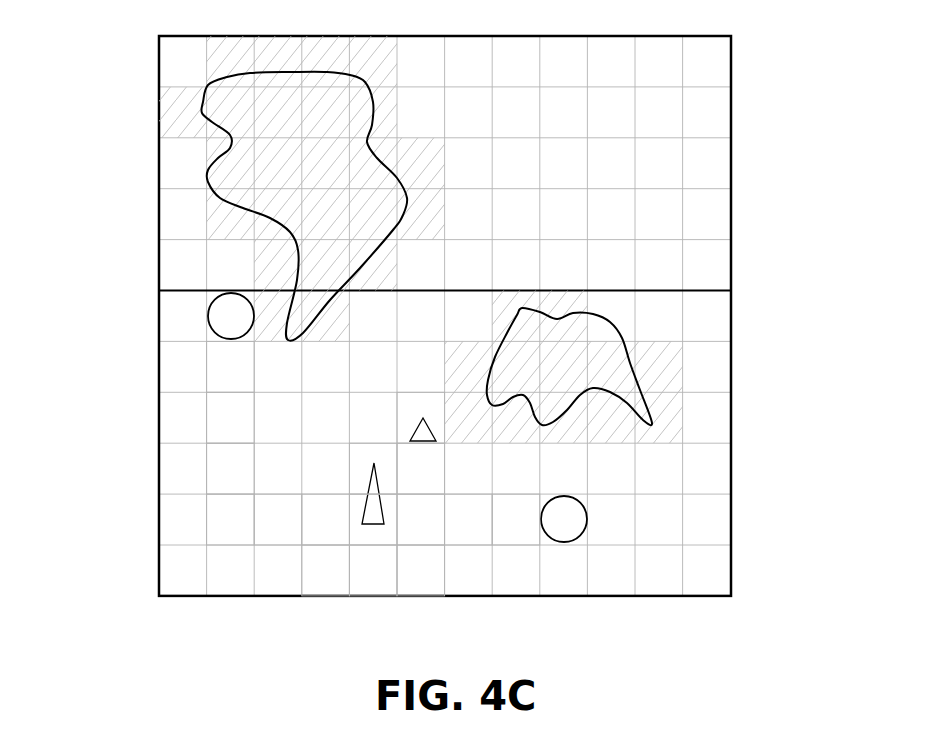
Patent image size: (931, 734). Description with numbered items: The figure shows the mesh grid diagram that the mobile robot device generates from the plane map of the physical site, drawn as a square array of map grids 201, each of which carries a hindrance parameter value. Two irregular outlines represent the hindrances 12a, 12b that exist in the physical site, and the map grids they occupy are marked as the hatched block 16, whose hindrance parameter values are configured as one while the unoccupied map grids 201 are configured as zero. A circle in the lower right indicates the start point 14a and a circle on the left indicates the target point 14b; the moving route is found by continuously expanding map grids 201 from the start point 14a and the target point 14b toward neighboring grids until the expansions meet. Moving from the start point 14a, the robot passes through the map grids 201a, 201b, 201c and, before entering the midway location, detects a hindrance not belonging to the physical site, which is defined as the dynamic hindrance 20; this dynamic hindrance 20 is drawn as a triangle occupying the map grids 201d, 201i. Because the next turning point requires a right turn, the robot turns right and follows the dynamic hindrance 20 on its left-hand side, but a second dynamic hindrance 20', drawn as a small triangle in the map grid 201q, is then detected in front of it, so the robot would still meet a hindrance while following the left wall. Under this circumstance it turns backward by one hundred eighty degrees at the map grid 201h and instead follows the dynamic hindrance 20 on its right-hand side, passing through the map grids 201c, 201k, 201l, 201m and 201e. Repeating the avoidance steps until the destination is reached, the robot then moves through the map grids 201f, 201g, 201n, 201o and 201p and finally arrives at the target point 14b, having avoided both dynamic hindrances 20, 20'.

The map grid 201 is at (182, 63).
The block 16 is at (180, 108).
The hindrance 12a is at (235, 178).
The hindrance 12b is at (615, 374).
The start point 14a is at (570, 522).
The target point 14b is at (232, 322).
The dynamic hindrance 20 is at (350, 566).
The dynamic hindrance 20' is at (354, 537).
The map grid 201a is at (516, 519).
The map grid 201b is at (469, 519).
The map grid 201c is at (421, 519).
The map grid 201d is at (373, 520).
The map grid 201e is at (326, 519).
The map grid 201f is at (278, 519).
The map grid 201g is at (231, 519).
The map grid 201h is at (421, 468).
The map grid 201i is at (373, 468).
The map grid 201k is at (421, 570).
The map grid 201l is at (373, 570).
The map grid 201m is at (326, 570).
The map grid 201n is at (231, 468).
The map grid 201o is at (231, 417).
The map grid 201p is at (231, 366).
The map grid 201q is at (421, 417).